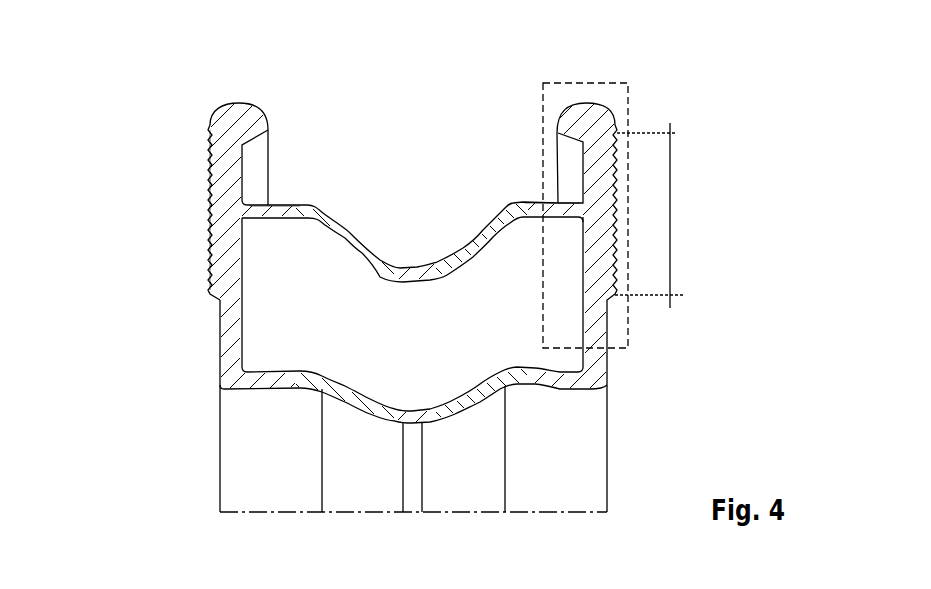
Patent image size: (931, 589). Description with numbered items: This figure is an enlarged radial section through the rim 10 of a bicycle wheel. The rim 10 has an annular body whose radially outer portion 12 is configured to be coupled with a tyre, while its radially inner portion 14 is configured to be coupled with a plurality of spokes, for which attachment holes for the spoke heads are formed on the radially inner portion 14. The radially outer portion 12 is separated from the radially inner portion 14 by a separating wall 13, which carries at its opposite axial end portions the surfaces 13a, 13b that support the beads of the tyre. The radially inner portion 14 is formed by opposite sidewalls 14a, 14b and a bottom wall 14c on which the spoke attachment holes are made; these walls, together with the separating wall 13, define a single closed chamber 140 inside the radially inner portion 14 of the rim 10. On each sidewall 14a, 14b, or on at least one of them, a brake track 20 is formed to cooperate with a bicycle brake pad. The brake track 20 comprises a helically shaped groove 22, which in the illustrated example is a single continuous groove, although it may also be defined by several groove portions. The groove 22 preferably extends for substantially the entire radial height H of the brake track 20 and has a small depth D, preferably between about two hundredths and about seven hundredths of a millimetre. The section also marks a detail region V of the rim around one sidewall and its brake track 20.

The rim 10 is at (133, 224).
The radially outer portion 12 is at (398, 127).
The separating wall 13 is at (433, 262).
The surface 13a is at (257, 207).
The surface 13b is at (565, 210).
The radially inner portion 14 is at (385, 468).
The sidewall 14a is at (221, 333).
The sidewall 14b is at (607, 336).
The bottom wall 14c is at (433, 425).
The brake track 20 is at (202, 197).
The helically shaped groove 22 is at (210, 264).
The closed chamber 140 is at (452, 340).
The detail region V is at (543, 132).
The radial height H is at (672, 230).
The depth D is at (622, 588).